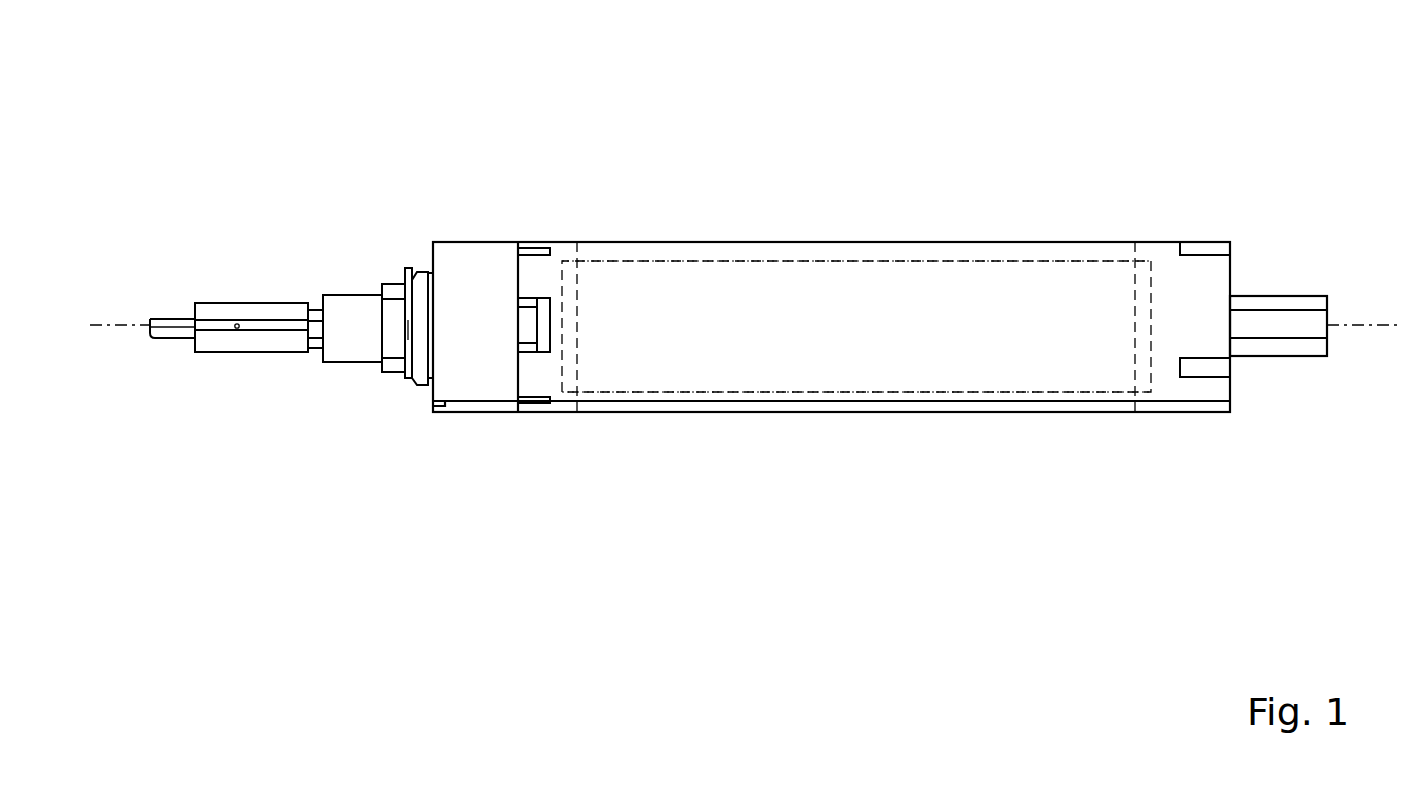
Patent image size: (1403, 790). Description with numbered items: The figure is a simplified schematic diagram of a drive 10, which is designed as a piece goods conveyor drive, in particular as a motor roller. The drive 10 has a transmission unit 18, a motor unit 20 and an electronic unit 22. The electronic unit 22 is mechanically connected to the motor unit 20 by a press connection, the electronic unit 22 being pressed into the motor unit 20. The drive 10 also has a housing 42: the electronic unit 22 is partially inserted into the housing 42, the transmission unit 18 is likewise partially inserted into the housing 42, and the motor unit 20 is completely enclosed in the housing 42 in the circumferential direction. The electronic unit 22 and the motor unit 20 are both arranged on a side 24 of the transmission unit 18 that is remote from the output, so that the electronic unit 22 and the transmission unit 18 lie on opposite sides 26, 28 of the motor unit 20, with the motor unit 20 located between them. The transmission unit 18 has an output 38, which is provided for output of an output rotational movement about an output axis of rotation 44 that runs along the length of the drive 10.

The drive 10 is at (1040, 98).
The transmission unit 18 is at (1267, 323).
The motor unit 20 is at (757, 288).
The electronic unit 22 is at (487, 288).
The side remote from the output 24 is at (1133, 318).
The side of the motor unit 26 is at (552, 285).
The side of the motor unit 28 is at (1153, 298).
The output 38 is at (1302, 323).
The housing 42 is at (1112, 242).
The output axis of rotation 44 is at (1368, 327).